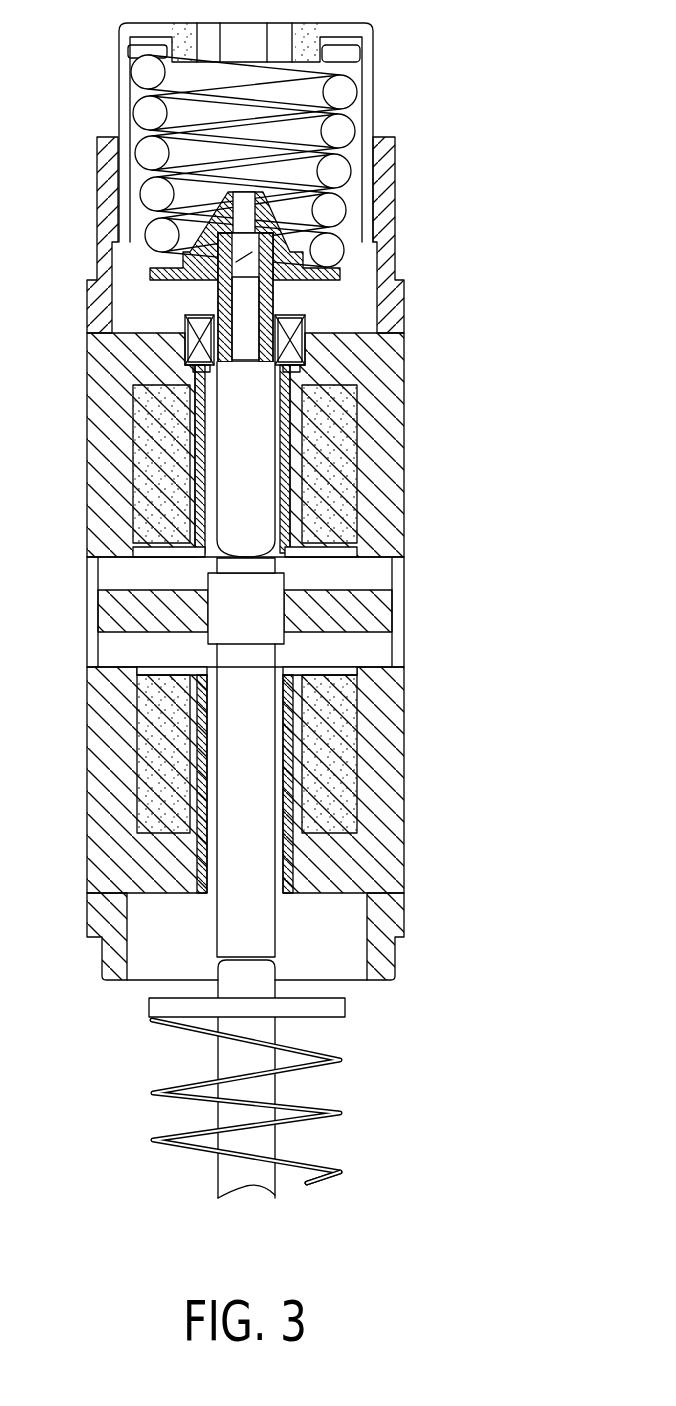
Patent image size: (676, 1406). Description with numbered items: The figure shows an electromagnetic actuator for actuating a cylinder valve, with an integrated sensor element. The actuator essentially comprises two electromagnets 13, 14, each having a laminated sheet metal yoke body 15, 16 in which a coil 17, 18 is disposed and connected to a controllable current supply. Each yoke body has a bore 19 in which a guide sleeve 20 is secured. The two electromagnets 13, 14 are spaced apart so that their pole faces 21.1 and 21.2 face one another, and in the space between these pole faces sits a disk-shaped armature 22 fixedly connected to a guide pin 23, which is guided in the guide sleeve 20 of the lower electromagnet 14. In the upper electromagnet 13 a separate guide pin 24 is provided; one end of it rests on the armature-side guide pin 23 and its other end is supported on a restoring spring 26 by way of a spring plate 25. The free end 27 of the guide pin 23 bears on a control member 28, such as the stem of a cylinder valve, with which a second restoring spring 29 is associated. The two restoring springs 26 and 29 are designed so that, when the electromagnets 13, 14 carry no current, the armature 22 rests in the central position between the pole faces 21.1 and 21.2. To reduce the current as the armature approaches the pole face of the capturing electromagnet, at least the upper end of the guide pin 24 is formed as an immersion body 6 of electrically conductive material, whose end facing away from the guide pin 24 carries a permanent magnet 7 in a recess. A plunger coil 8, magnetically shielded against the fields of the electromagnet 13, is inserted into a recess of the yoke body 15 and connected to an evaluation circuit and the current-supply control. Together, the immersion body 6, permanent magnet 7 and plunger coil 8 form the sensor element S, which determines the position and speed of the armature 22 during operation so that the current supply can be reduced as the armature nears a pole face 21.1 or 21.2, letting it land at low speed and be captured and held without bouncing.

The immersion body 6 is at (227, 377).
The permanent magnet 7 is at (237, 318).
The plunger coil 8 is at (185, 358).
The electromagnet 13 is at (416, 340).
The electromagnet 14 is at (422, 890).
The yoke body 15 is at (396, 393).
The yoke body 16 is at (398, 837).
The coil 17 is at (352, 452).
The coil 18 is at (342, 763).
The bore 19 is at (215, 677).
The guide sleeve 20 is at (207, 782).
The pole face 21.1 is at (391, 565).
The pole face 21.2 is at (381, 658).
The armature 22 is at (384, 610).
The guide pin 23 is at (267, 713).
The guide pin 24 is at (225, 443).
The spring plate 25 is at (275, 270).
The restoring spring 26 is at (343, 128).
The free end 27 is at (263, 947).
The control member 28 is at (328, 1088).
The restoring spring 29 is at (322, 1123).
The sensor element S is at (362, 277).